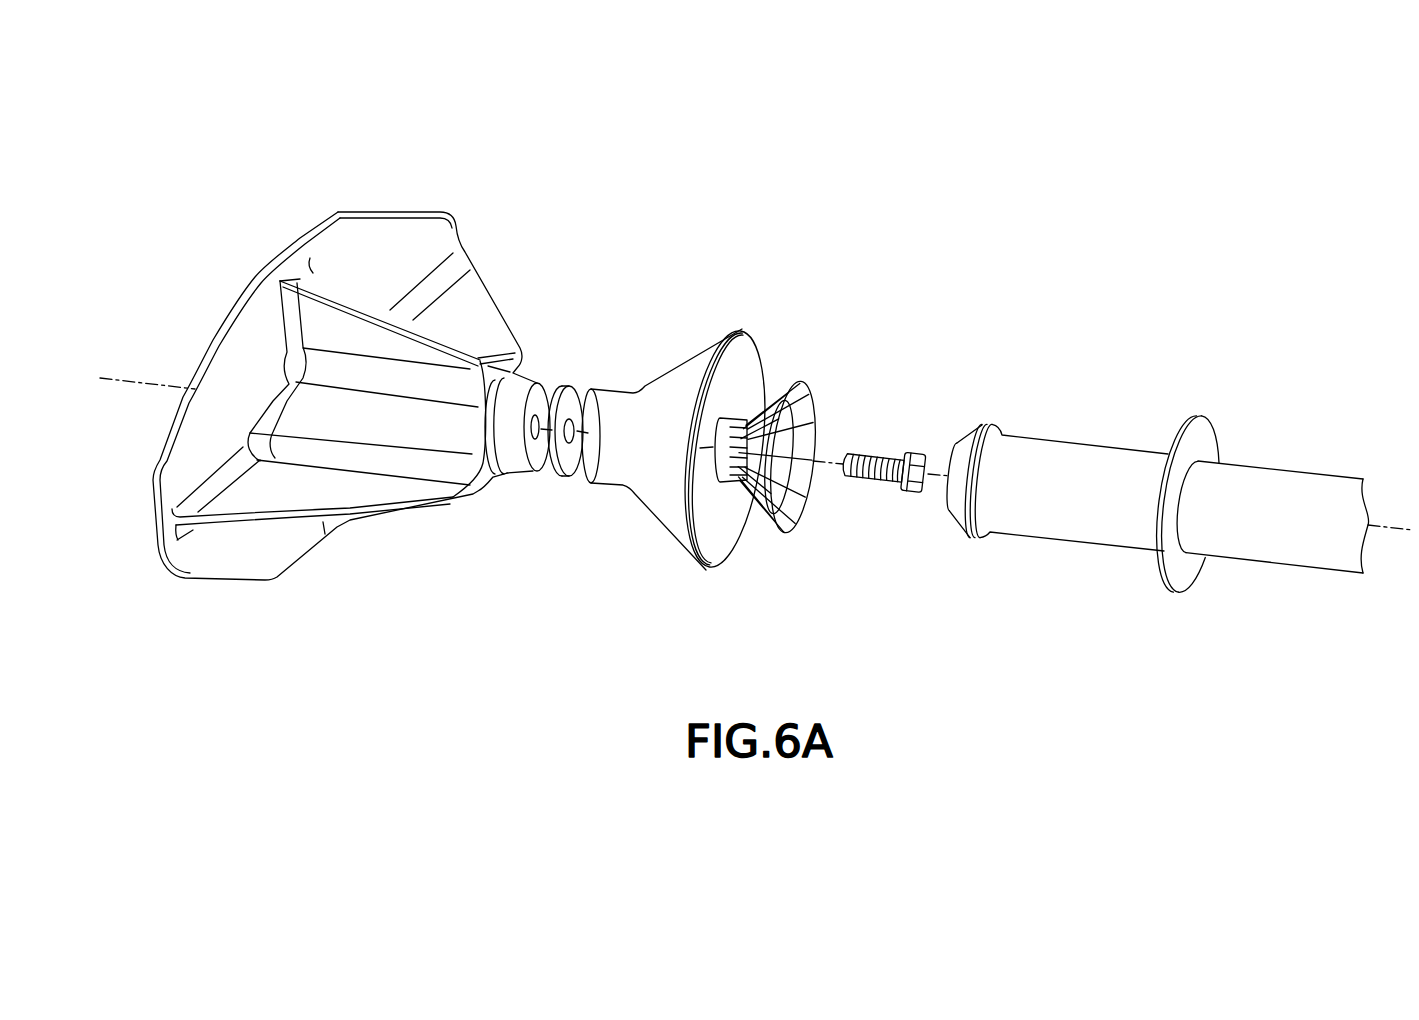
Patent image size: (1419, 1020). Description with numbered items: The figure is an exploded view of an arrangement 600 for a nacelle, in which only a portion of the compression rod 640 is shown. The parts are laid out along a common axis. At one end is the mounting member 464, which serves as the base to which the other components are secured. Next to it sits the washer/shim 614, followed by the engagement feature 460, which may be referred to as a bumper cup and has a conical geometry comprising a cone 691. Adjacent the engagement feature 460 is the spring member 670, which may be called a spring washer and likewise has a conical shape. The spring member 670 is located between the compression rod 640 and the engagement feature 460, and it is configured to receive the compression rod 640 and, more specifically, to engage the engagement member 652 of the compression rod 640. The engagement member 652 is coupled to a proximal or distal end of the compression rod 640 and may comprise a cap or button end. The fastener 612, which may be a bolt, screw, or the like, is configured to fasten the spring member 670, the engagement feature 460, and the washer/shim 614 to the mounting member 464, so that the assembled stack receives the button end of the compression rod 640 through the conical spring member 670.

The arrangement 600 is at (1089, 198).
The mounting member 464 is at (388, 210).
The washer/shim 614 is at (574, 380).
The engagement feature 460 is at (679, 429).
The cone 691 is at (677, 503).
The spring member 670 is at (777, 393).
The fastener 612 is at (875, 458).
The engagement member 652 is at (955, 458).
The compression rod 640 is at (1080, 458).